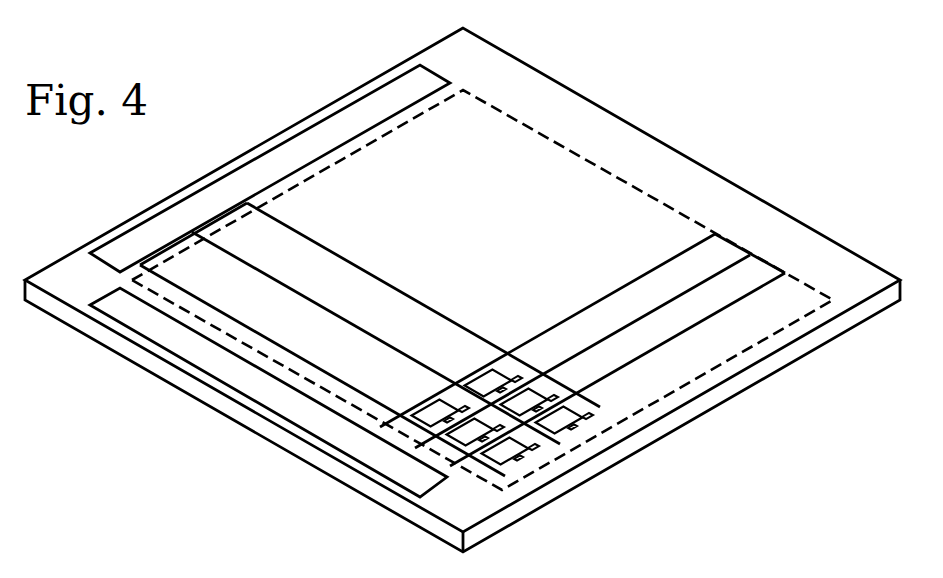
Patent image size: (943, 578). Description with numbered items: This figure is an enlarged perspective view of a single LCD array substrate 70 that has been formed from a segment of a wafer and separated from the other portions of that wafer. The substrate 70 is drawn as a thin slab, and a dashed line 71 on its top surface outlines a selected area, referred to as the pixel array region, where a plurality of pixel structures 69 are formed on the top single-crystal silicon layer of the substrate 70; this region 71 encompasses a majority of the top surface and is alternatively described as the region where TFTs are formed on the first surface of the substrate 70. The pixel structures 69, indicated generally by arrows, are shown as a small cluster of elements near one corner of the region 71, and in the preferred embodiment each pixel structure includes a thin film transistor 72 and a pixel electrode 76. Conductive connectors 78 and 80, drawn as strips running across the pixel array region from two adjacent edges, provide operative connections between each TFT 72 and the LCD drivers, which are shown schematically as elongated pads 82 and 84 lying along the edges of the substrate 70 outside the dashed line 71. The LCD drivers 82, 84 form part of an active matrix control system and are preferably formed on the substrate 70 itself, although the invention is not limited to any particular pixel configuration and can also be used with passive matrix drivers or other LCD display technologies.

The substrate 70 is at (613, 80).
The dashed line 71 is at (651, 196).
The thin film transistor (TFT) 72 is at (590, 412).
The pixel electrode 76 is at (572, 428).
The pixel structures 69 is at (577, 434).
The conductive connector 78 is at (260, 333).
The conductive connector 80 is at (670, 340).
The LCD driver 82 is at (287, 163).
The LCD driver 84 is at (143, 328).